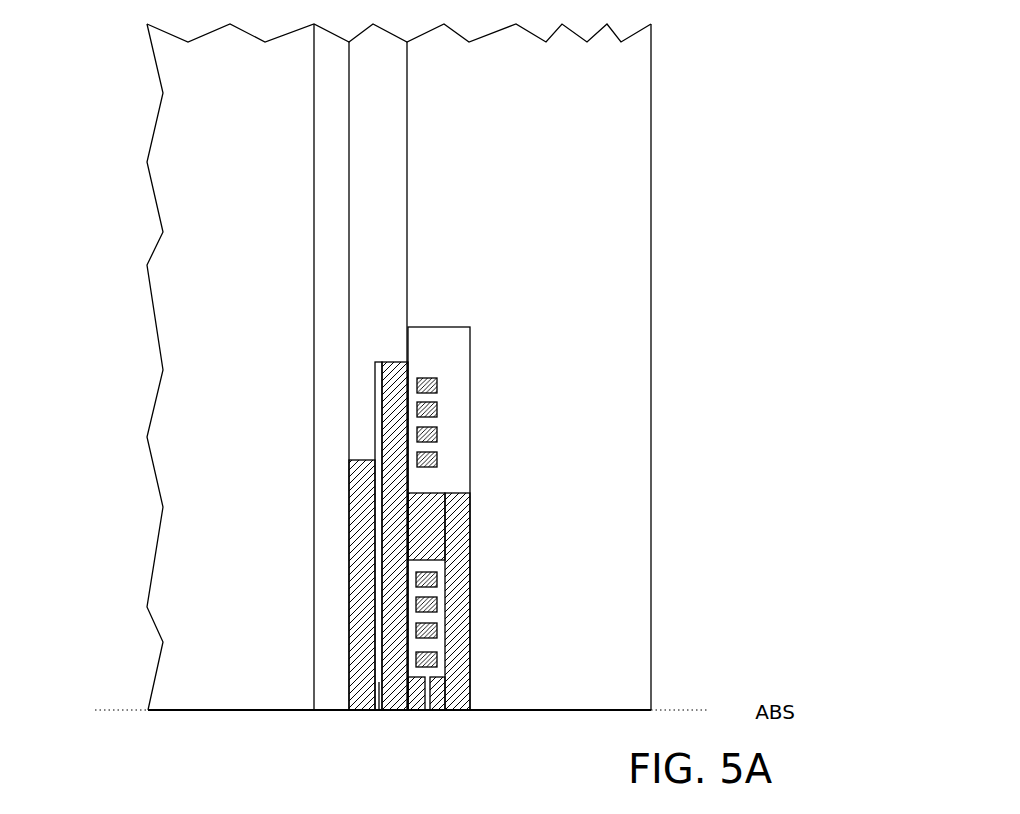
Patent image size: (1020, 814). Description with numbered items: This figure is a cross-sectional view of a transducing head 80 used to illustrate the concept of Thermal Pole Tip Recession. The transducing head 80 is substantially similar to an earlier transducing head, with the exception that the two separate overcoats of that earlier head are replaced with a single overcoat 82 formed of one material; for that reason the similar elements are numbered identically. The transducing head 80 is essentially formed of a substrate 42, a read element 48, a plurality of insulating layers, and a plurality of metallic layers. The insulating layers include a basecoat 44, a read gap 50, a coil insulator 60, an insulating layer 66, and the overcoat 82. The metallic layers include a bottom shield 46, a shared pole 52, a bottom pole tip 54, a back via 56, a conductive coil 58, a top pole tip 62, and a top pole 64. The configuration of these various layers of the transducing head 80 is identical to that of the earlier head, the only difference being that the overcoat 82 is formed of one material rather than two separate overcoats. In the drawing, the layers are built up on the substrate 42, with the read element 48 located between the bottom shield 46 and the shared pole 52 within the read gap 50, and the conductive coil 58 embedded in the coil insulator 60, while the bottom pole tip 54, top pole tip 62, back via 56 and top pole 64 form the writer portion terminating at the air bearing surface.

The transducing head 80 is at (736, 40).
The overcoat 82 is at (562, 610).
The substrate 42 is at (202, 625).
The basecoat 44 is at (327, 668).
The bottom shield 46 is at (365, 633).
The read element 48 is at (375, 712).
The read gap 50 is at (378, 589).
The shared pole 52 is at (388, 550).
The bottom pole tip 54 is at (417, 695).
The back via 56 is at (432, 527).
The conductive coil 58 is at (437, 467).
The coil insulator 60 is at (440, 608).
The top pole tip 62 is at (437, 698).
The top pole 64 is at (452, 668).
The insulating layer 66 is at (362, 260).